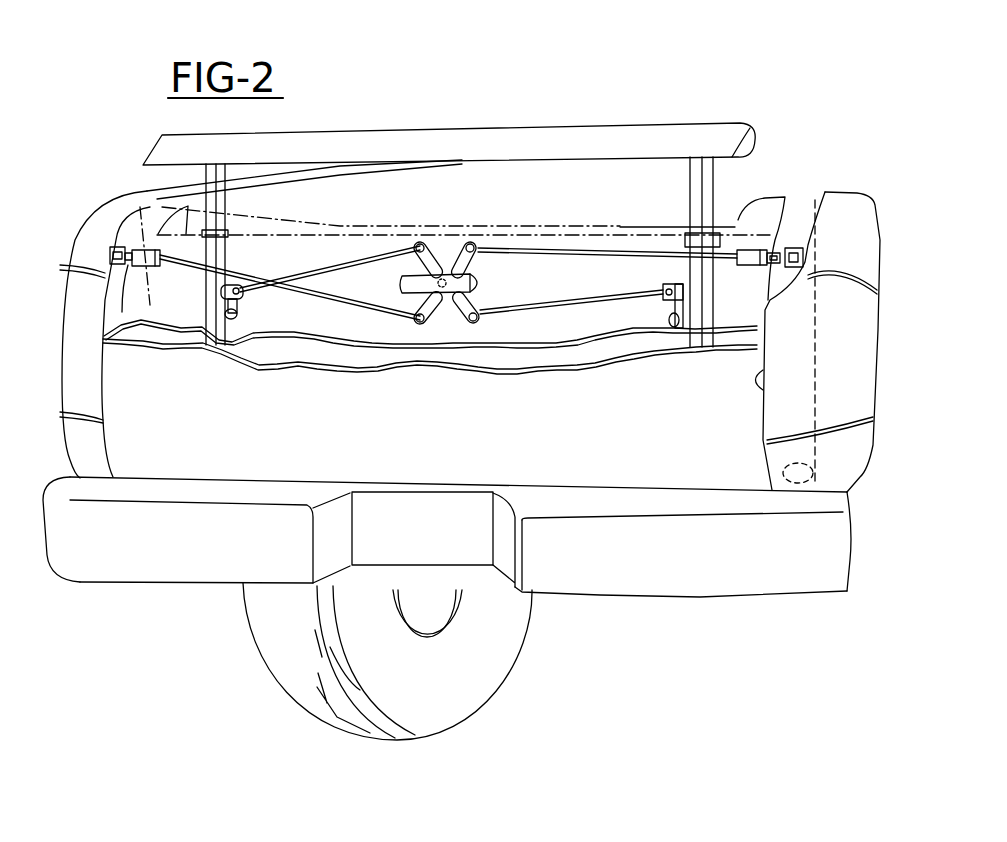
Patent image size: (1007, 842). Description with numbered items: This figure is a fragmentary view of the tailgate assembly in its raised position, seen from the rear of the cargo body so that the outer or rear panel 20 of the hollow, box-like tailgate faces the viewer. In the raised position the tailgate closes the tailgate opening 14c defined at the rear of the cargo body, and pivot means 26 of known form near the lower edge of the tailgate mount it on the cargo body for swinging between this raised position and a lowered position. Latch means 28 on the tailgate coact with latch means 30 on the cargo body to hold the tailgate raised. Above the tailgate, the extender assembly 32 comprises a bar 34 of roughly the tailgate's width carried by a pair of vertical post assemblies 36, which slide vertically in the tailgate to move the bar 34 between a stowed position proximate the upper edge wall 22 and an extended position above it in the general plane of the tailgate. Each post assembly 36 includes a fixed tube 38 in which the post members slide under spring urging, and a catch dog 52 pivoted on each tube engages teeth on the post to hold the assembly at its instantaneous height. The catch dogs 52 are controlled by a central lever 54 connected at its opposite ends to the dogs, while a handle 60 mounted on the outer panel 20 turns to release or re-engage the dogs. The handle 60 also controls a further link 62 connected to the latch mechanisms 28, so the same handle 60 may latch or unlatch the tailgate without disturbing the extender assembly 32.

The tailgate opening 14c is at (770, 368).
The outer or rear panel 20 is at (453, 341).
The upper edge wall 22 is at (760, 200).
The pivot means 26 is at (777, 493).
The latch means 28 is at (145, 266).
The latch means on the cargo body 30 is at (112, 248).
The extender assembly 32 is at (412, 180).
The bar 34 is at (410, 137).
The vertical post assemblies 36 is at (152, 184).
The fixed tube 38 is at (700, 337).
The catch dog 52 is at (247, 302).
The central lever 54 is at (438, 265).
The handle 60 is at (482, 286).
The link 62 is at (430, 327).